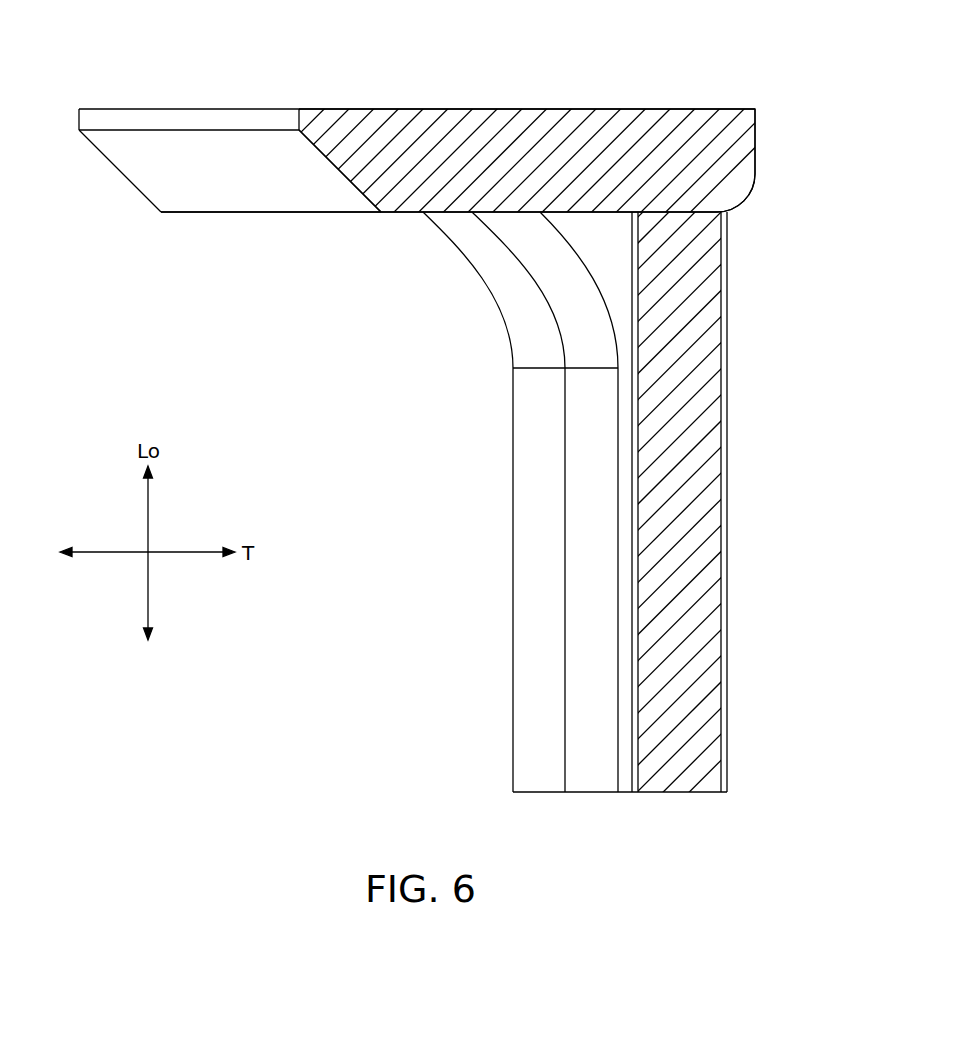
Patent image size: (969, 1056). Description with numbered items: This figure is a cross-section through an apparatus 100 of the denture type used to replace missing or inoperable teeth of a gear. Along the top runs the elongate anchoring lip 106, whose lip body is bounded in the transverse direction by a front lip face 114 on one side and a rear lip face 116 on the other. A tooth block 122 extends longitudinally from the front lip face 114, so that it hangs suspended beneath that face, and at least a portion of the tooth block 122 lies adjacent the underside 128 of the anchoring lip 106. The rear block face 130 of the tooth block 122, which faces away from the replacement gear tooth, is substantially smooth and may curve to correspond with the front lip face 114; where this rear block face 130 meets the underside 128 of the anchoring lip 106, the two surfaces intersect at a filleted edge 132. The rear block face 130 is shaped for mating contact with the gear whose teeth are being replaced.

The apparatus 100 is at (775, 68).
The anchoring lip 106 is at (357, 98).
The front lip face 114 is at (757, 140).
The rear lip face 116 is at (118, 172).
The tooth block 122 is at (741, 673).
The underside 128 is at (255, 214).
The rear block face 130 is at (512, 603).
The filleted edge 132 is at (410, 335).